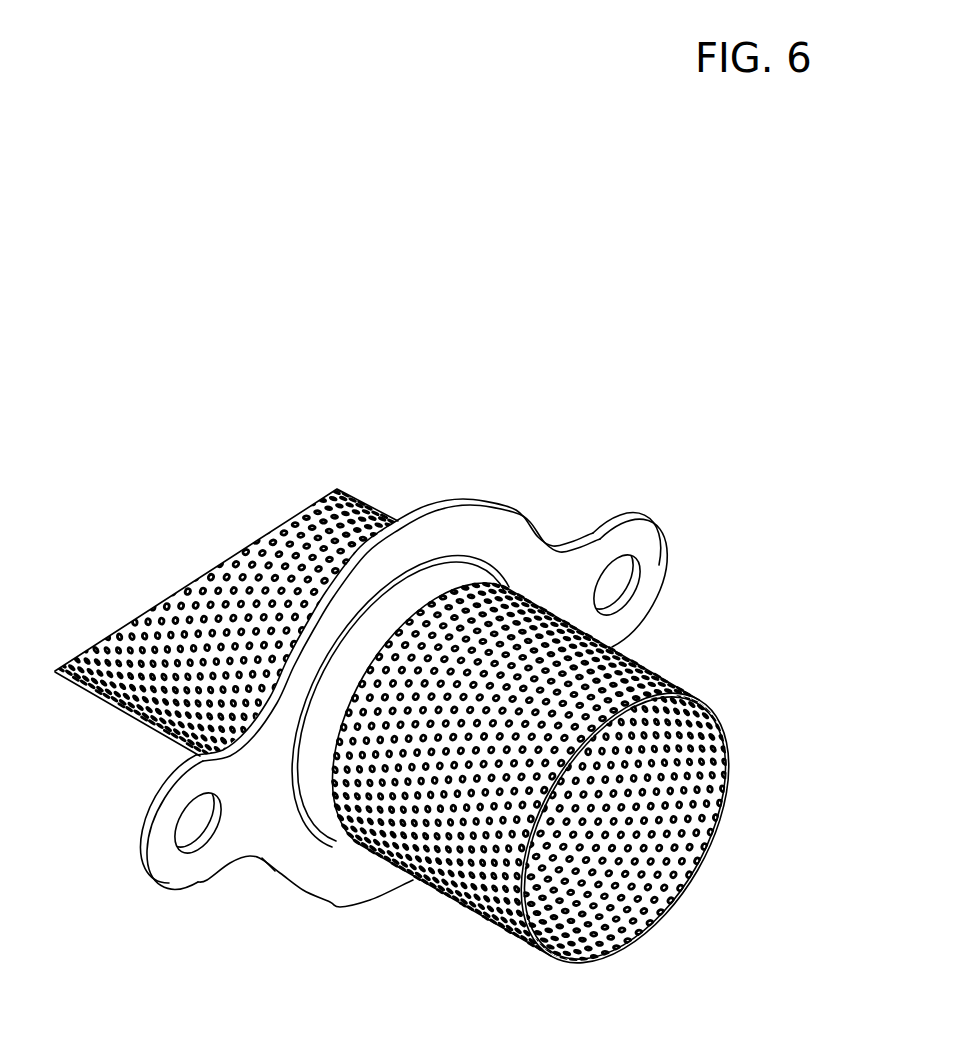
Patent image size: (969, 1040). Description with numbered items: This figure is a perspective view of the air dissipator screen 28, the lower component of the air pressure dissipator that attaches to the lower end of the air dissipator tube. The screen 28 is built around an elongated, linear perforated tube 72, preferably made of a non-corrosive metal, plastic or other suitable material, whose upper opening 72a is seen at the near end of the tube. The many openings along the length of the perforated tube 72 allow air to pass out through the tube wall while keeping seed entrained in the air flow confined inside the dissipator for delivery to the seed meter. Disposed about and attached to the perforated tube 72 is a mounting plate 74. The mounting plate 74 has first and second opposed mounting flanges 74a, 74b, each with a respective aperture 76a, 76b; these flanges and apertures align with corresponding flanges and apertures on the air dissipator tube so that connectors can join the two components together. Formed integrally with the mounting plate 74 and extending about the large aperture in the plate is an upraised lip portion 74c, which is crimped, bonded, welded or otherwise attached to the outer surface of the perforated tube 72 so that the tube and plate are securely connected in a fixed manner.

The air dissipator screen 28 is at (692, 571).
The perforated tube 72 is at (655, 681).
The upper opening 72a is at (647, 917).
The mounting plate 74 is at (446, 498).
The first mounting flange 74a is at (152, 878).
The second mounting flange 74b is at (635, 517).
The upraised lip portion 74c is at (413, 600).
The aperture 76a is at (198, 825).
The aperture 76b is at (617, 578).